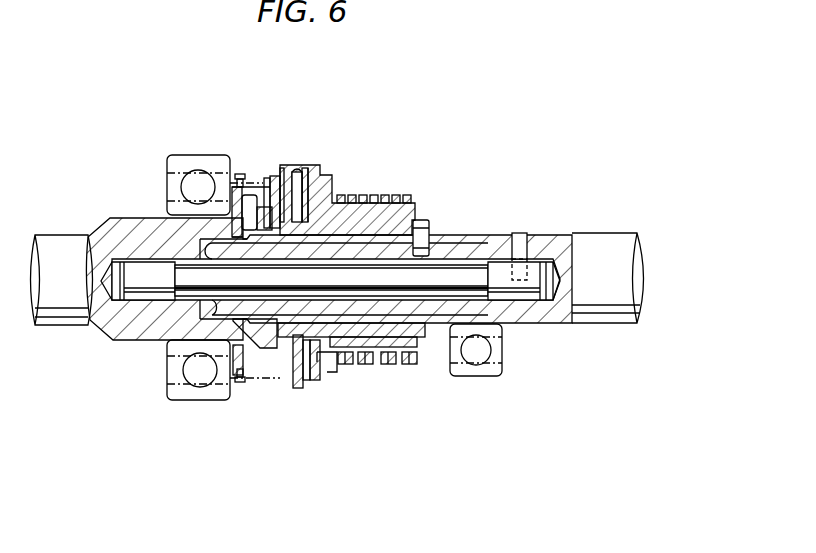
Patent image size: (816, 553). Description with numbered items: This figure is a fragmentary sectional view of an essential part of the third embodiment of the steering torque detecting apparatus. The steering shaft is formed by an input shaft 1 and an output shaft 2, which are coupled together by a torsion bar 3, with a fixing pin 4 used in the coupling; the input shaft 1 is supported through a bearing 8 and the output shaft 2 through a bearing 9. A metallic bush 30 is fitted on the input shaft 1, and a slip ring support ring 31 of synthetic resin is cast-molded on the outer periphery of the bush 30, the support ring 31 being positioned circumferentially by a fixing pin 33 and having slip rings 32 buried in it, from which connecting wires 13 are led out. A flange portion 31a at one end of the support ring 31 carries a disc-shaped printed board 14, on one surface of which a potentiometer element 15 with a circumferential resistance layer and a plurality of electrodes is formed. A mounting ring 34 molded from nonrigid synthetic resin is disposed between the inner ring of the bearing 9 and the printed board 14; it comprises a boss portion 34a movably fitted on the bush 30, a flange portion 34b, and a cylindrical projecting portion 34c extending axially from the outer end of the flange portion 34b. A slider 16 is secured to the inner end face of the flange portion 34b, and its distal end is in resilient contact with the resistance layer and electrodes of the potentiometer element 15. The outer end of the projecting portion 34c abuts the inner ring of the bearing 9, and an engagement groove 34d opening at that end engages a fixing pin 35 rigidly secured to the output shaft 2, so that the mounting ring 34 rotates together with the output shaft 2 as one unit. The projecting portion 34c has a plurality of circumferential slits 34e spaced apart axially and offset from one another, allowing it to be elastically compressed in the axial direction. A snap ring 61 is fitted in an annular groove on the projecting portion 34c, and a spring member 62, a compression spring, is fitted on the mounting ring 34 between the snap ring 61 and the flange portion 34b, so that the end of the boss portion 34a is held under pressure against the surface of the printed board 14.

The input shaft 1 is at (579, 233).
The output shaft 2 is at (50, 235).
The torsion bar 3 is at (478, 300).
The fixing pin 4 is at (520, 233).
The bearing 8 is at (503, 366).
The bearing 9 is at (177, 393).
The connecting wires 13 is at (330, 365).
The printed board 14 is at (318, 166).
The potentiometer element 15 is at (305, 386).
The slider 16 is at (303, 390).
The bush 30 is at (424, 340).
The slip ring support ring 31 is at (400, 364).
The flange portion 31a is at (335, 194).
The slip rings 32 is at (362, 347).
The fixing pin 33 is at (427, 219).
The mounting ring 34 is at (383, 103).
The boss portion 34a is at (300, 165).
The flange portion 34b is at (281, 168).
The cylindrical projecting portion 34c is at (251, 178).
The engagement groove 34d is at (237, 174).
The slits 34e is at (268, 178).
The fixing pin 35 is at (248, 219).
The snap ring 61 is at (240, 382).
The spring member 62 is at (277, 380).